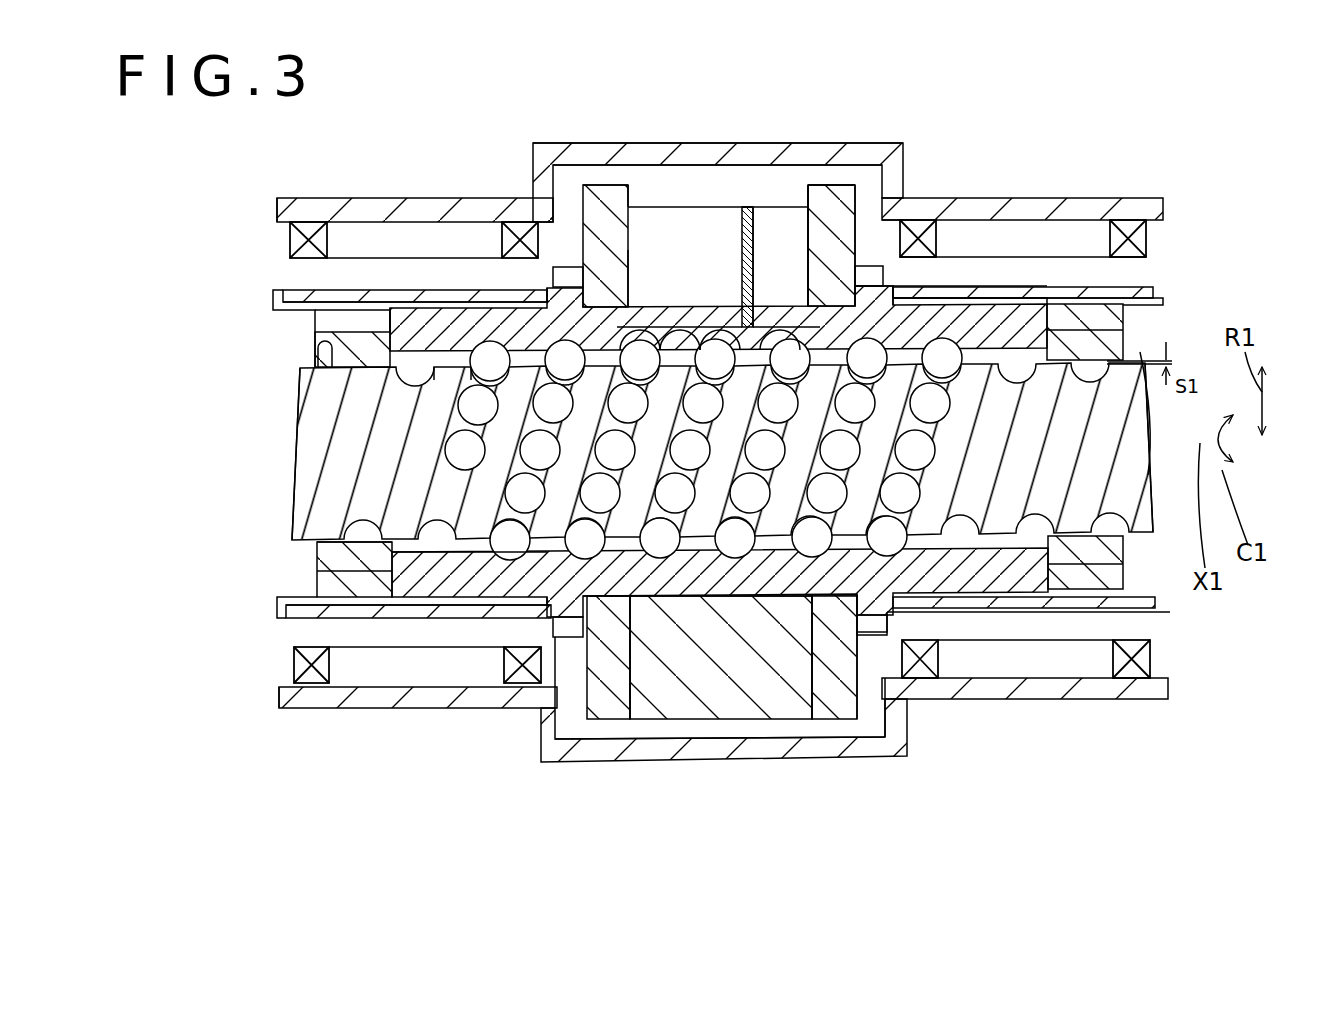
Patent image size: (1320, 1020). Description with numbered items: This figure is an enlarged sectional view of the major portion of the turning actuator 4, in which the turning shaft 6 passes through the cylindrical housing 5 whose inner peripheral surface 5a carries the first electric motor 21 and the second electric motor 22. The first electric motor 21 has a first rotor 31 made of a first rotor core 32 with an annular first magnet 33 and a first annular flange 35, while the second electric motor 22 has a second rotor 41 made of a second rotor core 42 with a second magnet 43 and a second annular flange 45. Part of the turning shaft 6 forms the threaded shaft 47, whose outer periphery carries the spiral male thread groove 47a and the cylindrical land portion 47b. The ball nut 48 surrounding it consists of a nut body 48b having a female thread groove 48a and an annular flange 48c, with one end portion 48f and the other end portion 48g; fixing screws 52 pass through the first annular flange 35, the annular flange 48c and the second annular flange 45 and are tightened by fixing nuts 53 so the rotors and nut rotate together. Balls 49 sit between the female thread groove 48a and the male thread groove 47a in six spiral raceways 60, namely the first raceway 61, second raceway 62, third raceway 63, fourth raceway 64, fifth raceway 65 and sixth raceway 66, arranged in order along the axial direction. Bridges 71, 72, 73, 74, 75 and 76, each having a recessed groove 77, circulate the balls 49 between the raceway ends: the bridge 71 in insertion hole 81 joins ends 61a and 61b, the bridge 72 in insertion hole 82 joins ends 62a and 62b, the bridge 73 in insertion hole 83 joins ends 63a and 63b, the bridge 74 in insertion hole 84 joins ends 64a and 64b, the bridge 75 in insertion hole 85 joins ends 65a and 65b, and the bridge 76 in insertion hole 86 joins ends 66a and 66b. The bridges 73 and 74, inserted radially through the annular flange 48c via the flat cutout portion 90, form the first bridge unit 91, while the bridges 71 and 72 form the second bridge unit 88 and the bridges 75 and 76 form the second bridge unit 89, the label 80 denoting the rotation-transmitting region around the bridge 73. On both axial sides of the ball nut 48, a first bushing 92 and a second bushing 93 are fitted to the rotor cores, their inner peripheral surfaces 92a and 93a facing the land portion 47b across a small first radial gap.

The turning actuator 4 is at (1104, 140).
The housing 5 is at (293, 198).
The inner peripheral surface 5a is at (282, 232).
The turning shaft 6 is at (305, 352).
The first electric motor 21 is at (397, 212).
The second electric motor 22 is at (1132, 196).
The first rotor 31 is at (166, 262).
The first rotor core 32 is at (275, 298).
The first magnet 33 is at (283, 290).
The first annular flange 35 is at (607, 143).
The second rotor 41 is at (1278, 232).
The second rotor core 42 is at (1160, 285).
The second magnet 43 is at (1160, 258).
The second annular flange 45 is at (832, 190).
The threaded shaft 47 is at (350, 590).
The male thread groove 47a is at (470, 515).
The land portion 47b is at (320, 417).
The ball nut 48 is at (405, 580).
The female thread groove 48a is at (550, 600).
The nut body 48b is at (645, 725).
The annular flange 48c is at (695, 725).
The one end portion 48f is at (374, 575).
The other end portion 48g is at (1060, 610).
The balls 49 is at (477, 563).
The fixing screws 52 is at (587, 196).
The fixing nuts 53 is at (905, 143).
The raceways 60 is at (508, 560).
The first raceway 61 is at (612, 600).
The one end of raceway 61 61a is at (560, 440).
The other end of raceway 61 61b is at (600, 470).
The second raceway 62 is at (643, 560).
The one end of raceway 62 62a is at (603, 185).
The other end of raceway 62 62b is at (721, 657).
The third raceway 63 is at (708, 556).
The one end of raceway 63 63a is at (658, 332).
The other end of raceway 63 63b is at (720, 343).
The fourth raceway 64 is at (752, 600).
The one end of raceway 64 64a is at (797, 300).
The other end of raceway 64 64b is at (852, 300).
The fifth raceway 65 is at (818, 600).
The one end of raceway 65 65a is at (737, 640).
The other end of raceway 65 65b is at (935, 330).
The sixth raceway 66 is at (945, 625).
The one end of raceway 66 66a is at (792, 600).
The other end of raceway 66 66b is at (1017, 320).
The bridge 71 is at (473, 317).
The bridge 72 is at (525, 317).
The bridge 73 is at (744, 207).
The bridge 74 is at (753, 207).
The bridge 75 is at (895, 385).
The bridge 76 is at (958, 385).
The recessed groove 77 is at (677, 330).
The rotation transmitting portion 80 is at (650, 90).
The insertion hole 81 is at (455, 420).
The insertion hole 82 is at (628, 250).
The insertion hole 83 is at (630, 185).
The insertion hole 84 is at (826, 185).
The insertion hole 85 is at (872, 300).
The insertion hole 86 is at (950, 325).
The second bridge unit 88 is at (460, 155).
The second bridge unit 89 is at (995, 147).
The cutout portion 90 is at (690, 207).
The first bridge unit 91 is at (795, 84).
The first bushing 92 is at (315, 342).
The inner peripheral surface 92a is at (328, 362).
The second bushing 93 is at (1125, 330).
The inner peripheral surface 93a is at (1252, 438).